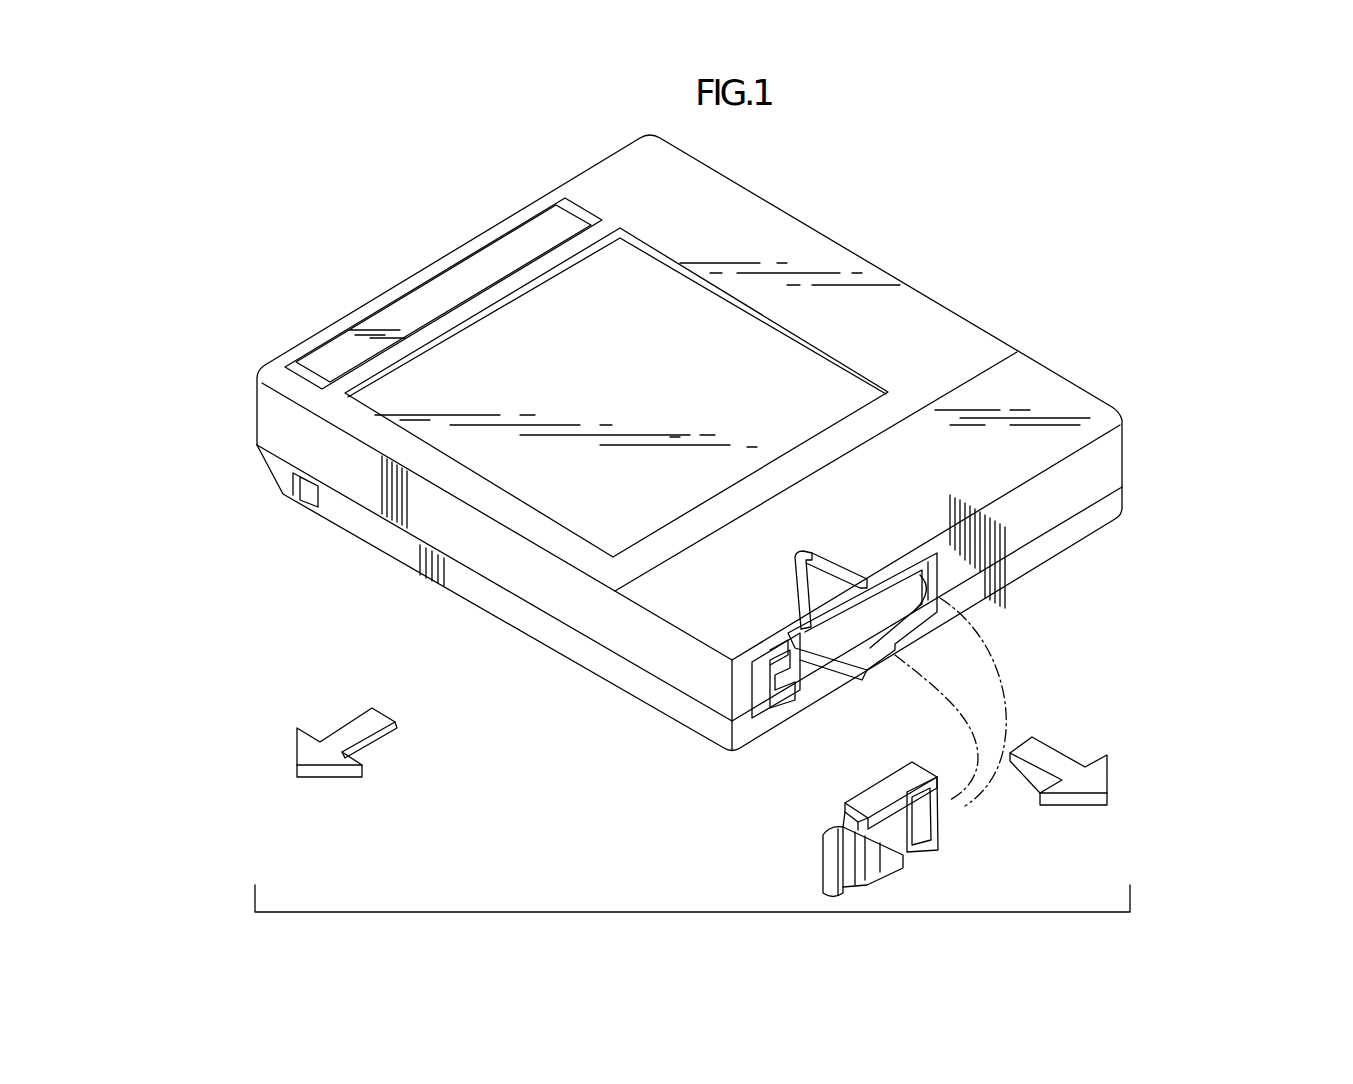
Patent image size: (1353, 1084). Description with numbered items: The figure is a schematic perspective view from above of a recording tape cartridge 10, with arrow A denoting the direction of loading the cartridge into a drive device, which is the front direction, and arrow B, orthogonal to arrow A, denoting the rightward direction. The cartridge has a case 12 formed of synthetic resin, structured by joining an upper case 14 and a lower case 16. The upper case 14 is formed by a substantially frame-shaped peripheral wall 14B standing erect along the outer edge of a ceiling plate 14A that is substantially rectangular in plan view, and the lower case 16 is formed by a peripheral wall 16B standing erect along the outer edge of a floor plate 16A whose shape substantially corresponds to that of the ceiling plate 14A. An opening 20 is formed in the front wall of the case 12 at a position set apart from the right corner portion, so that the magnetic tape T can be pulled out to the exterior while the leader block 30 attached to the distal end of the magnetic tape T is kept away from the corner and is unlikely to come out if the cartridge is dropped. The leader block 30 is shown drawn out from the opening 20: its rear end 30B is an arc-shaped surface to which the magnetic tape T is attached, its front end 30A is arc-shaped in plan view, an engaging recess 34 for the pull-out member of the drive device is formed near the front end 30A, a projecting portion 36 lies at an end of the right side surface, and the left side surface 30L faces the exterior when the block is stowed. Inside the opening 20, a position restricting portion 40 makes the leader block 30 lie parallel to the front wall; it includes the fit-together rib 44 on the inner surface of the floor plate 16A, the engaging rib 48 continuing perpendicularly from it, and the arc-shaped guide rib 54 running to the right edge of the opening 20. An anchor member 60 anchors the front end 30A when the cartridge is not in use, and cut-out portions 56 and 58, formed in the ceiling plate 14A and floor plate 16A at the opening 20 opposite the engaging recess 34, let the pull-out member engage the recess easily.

The recording tape cartridge 10 is at (913, 233).
The case 12 is at (1137, 540).
The upper case 14 is at (1030, 518).
The ceiling plate 14A is at (992, 360).
The peripheral wall 14B is at (523, 572).
The lower case 16 is at (1030, 563).
The floor plate 16A is at (670, 715).
The peripheral wall 16B is at (562, 638).
The opening 20 is at (870, 672).
The leader block 30 is at (855, 788).
The front end 30A is at (827, 868).
The rear end 30B is at (945, 822).
The left side surface 30L is at (900, 853).
The engaging recess 34 is at (832, 818).
The projecting portion 36 is at (887, 777).
The position restricting portion 40 is at (924, 500).
The fit-together rib 44 is at (903, 573).
The engaging rib 48 is at (838, 582).
The guide rib 54 is at (800, 693).
The cut-out portion 56 is at (797, 553).
The cut-out portion 58 is at (813, 650).
The anchor member 60 is at (780, 650).
The arrow A is at (1048, 757).
The arrow B is at (360, 730).
The magnetic tape T is at (992, 797).